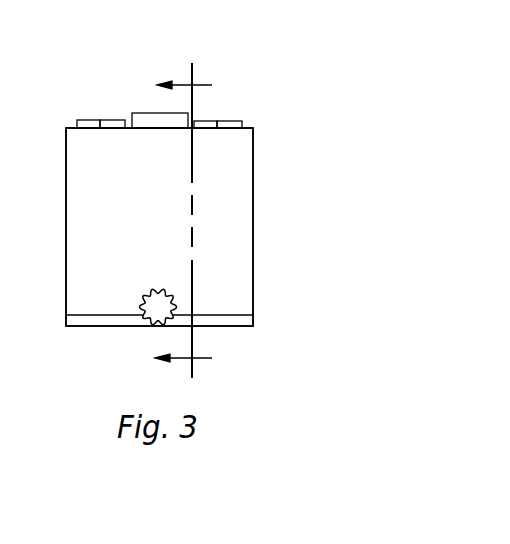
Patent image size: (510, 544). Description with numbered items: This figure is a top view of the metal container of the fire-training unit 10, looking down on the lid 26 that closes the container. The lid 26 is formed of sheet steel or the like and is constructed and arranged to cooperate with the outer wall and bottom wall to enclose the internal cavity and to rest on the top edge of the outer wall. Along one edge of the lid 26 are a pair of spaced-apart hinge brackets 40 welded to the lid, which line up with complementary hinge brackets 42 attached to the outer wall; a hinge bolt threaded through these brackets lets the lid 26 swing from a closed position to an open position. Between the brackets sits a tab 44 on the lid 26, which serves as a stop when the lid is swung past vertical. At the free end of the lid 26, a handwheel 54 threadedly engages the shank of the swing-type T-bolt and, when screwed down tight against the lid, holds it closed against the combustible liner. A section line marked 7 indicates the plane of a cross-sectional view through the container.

The unit 10 is at (283, 190).
The lid 26 is at (253, 277).
The hinge brackets 40 is at (88, 118).
The complementary hinge brackets 42 is at (113, 118).
The tab 44 is at (143, 113).
The handwheel 54 is at (157, 326).
The section line 7- 7 is at (183, 220).